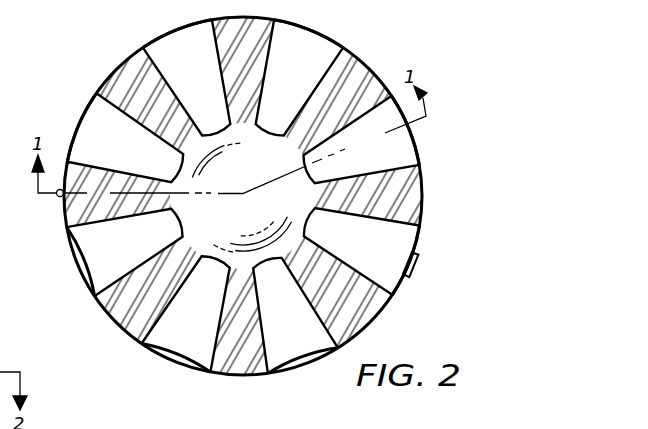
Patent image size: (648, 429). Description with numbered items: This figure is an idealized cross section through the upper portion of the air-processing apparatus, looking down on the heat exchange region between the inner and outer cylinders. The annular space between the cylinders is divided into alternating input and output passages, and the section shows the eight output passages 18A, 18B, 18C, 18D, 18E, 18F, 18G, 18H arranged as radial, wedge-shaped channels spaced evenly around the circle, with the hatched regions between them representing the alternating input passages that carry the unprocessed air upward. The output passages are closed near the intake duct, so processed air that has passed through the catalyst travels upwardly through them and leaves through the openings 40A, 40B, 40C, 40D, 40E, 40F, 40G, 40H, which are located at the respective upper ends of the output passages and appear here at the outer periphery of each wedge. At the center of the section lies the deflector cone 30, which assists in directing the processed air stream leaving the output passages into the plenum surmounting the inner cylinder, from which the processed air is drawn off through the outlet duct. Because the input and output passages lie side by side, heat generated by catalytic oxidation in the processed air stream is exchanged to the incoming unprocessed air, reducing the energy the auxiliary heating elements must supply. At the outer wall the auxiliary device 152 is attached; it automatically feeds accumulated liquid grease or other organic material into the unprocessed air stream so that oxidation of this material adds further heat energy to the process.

The output passage 18A is at (380, 158).
The output passage 18B is at (372, 251).
The output passage 18C is at (307, 330).
The output passage 18D is at (203, 330).
The output passage 18E is at (133, 253).
The output passage 18F is at (138, 148).
The output passage 18G is at (203, 78).
The output passage 18H is at (305, 80).
The opening 40A is at (399, 146).
The opening 40B is at (389, 272).
The opening 40C is at (300, 348).
The opening 40D is at (185, 350).
The opening 40E is at (90, 258).
The opening 40F is at (100, 122).
The opening 40G is at (172, 43).
The opening 40H is at (297, 43).
The deflector cone 30 is at (257, 178).
The auxiliary device 152 is at (416, 253).